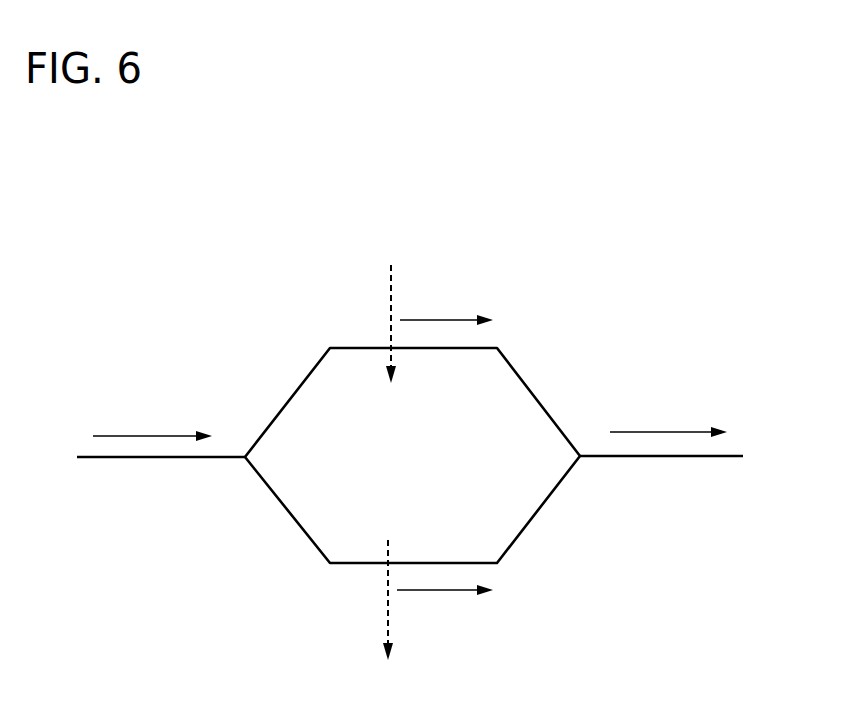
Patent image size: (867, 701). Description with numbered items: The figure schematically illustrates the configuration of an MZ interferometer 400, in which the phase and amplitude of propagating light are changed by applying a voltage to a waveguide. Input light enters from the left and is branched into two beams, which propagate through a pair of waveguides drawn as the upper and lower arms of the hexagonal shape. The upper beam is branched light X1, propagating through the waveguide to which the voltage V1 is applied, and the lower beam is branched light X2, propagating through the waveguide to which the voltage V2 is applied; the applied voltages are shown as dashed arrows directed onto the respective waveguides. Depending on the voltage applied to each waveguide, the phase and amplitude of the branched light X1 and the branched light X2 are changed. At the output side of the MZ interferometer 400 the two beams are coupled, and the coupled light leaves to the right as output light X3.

The MZ interferometer 400 is at (568, 208).
The voltage V1 is at (322, 324).
The voltage V2 is at (320, 609).
The branched light X1 is at (472, 292).
The branched light X2 is at (468, 620).
The output light X3 is at (680, 414).